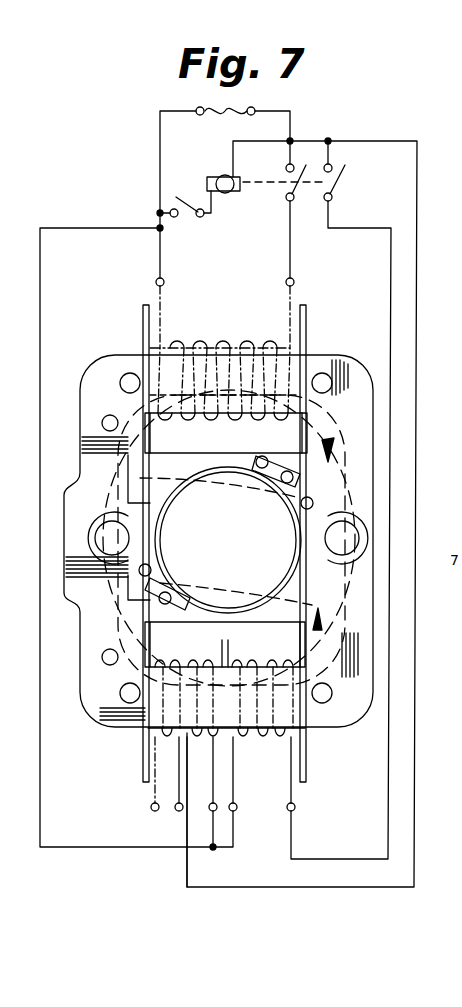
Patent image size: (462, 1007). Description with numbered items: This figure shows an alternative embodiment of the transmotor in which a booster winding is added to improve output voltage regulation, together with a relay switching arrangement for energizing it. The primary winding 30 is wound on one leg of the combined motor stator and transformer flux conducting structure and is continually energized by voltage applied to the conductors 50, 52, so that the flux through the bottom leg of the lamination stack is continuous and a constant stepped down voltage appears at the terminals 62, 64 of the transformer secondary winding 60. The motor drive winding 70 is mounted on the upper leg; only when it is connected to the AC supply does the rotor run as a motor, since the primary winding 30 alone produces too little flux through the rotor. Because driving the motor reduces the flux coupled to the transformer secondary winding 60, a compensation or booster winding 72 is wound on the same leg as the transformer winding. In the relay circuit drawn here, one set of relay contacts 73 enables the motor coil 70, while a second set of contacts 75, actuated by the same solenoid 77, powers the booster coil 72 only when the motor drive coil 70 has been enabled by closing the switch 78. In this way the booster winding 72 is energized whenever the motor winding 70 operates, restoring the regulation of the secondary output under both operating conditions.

The primary winding 30 is at (175, 770).
The conductor 50 is at (216, 811).
The conductor 52 is at (186, 870).
The transformer secondary winding 60 is at (173, 737).
The terminal 62 is at (176, 811).
The terminal 64 is at (151, 808).
The motor drive winding 70 is at (222, 342).
The booster winding 72 is at (263, 737).
The relay contacts 73 is at (300, 188).
The relay contacts 75 is at (345, 184).
The solenoid 77 is at (236, 193).
The switch 78 is at (181, 219).